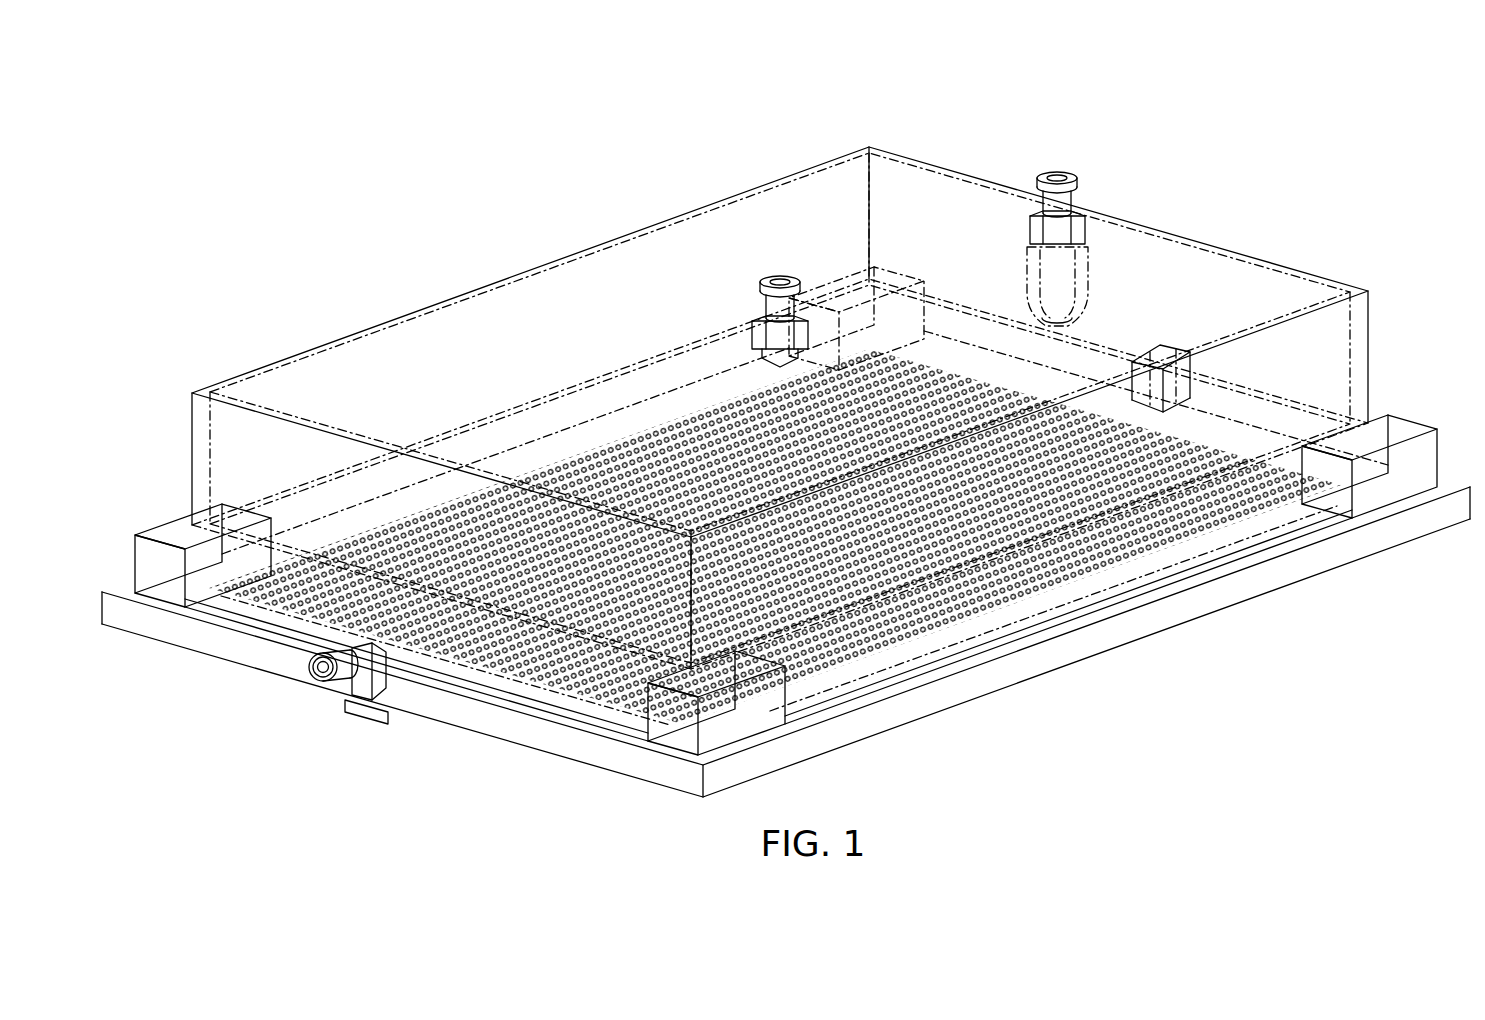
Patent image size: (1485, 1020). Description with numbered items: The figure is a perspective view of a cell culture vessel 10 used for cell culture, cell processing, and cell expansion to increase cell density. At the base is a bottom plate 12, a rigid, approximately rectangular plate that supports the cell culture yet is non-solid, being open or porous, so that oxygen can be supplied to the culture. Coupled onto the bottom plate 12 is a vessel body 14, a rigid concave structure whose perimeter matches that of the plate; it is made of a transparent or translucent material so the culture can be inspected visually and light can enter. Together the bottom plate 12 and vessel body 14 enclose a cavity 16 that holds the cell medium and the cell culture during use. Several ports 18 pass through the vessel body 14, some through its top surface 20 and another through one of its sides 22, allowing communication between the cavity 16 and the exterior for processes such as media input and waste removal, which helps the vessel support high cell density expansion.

The cell culture vessel 10 is at (1257, 130).
The bottom plate 12 is at (1085, 642).
The vessel body 14 is at (780, 408).
The cavity 16 is at (1180, 328).
The ports 18 is at (780, 275).
The top surface 20 is at (508, 260).
The sides 22 is at (124, 562).